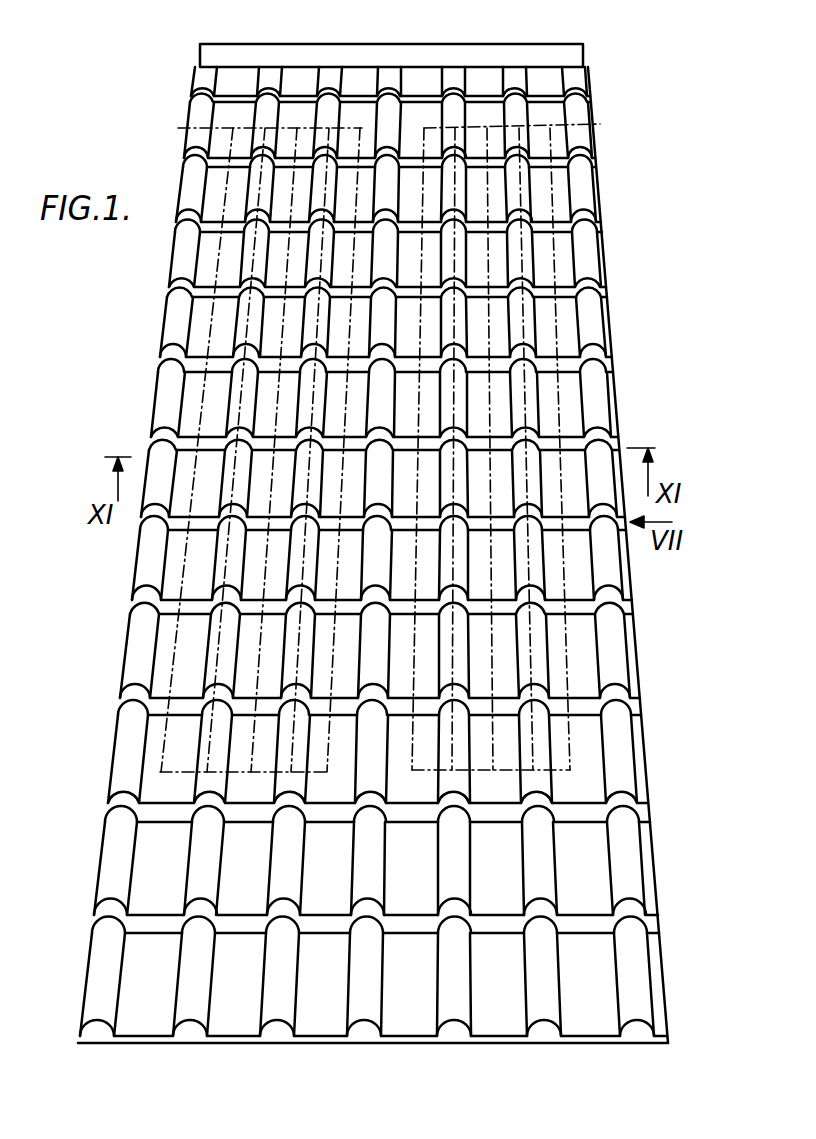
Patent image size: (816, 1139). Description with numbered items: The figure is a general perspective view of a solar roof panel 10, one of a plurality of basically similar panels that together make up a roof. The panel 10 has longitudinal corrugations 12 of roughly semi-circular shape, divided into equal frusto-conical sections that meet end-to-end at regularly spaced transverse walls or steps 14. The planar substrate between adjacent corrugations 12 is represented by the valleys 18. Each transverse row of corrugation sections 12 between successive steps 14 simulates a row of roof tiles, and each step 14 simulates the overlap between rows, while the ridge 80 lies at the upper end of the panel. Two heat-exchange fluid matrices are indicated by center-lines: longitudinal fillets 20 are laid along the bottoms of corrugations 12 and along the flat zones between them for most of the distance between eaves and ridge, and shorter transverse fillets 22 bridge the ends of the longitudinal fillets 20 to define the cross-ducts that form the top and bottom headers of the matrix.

The panel 10 is at (618, 406).
The longitudinal corrugations 12 is at (383, 1010).
The transverse walls or steps 14 is at (200, 96).
The valleys 18 is at (298, 82).
The longitudinal fillets 20 is at (266, 583).
The transverse fillets 22 is at (657, 768).
The ridge 80 is at (318, 42).